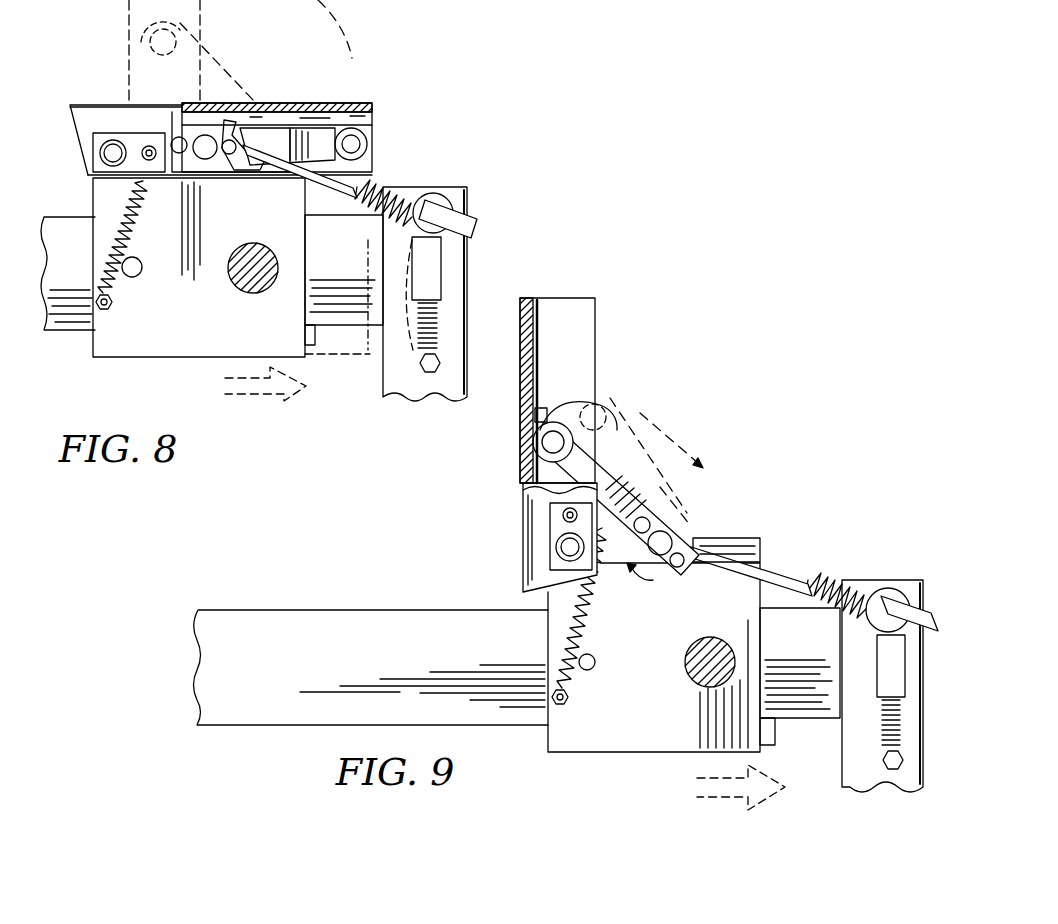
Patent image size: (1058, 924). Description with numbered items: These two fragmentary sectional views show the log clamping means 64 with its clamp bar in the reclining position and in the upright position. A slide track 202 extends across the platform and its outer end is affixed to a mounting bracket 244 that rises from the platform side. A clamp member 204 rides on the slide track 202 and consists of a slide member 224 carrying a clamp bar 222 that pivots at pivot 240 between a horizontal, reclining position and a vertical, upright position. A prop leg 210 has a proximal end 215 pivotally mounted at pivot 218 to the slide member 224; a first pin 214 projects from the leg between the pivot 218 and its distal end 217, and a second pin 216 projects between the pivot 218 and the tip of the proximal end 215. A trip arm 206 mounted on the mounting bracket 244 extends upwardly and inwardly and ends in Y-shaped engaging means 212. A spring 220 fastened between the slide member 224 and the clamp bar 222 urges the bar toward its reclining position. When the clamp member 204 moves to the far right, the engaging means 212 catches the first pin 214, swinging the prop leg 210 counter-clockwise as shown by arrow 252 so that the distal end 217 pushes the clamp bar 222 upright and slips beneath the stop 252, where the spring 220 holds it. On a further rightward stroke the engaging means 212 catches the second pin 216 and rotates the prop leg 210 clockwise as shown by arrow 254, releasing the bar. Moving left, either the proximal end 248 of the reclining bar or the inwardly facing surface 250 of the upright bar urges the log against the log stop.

In FIG. 8, the clamping means 64 is at (378, 85).
In FIG. 9, the clamping means 64 is at (722, 452).
In FIG. 8, the slide track 202 is at (70, 322).
In FIG. 9, the slide track 202 is at (362, 648).
In FIG. 8, the clamp member 204 is at (386, 124).
In FIG. 9, the clamp member 204 is at (652, 374).
In FIG. 8, the trip arm 206 is at (303, 200).
In FIG. 9, the trip arm 206 is at (797, 585).
In FIG. 8, the prop leg 210 is at (323, 130).
In FIG. 9, the prop leg 210 is at (568, 455).
In FIG. 8, the Y-shaped engaging means 212 is at (240, 105).
In FIG. 9, the Y-shaped engaging means 212 is at (680, 590).
In FIG. 8, the first pin 214 is at (222, 82).
In FIG. 9, the first pin 214 is at (648, 518).
In FIG. 8, the proximal end 215 is at (182, 178).
In FIG. 9, the proximal end 215 is at (665, 572).
In FIG. 8, the second pin 216 is at (175, 140).
In FIG. 9, the second pin 216 is at (770, 548).
In FIG. 8, the distal end 217 is at (198, 30).
In FIG. 9, the distal end 217 is at (608, 412).
In FIG. 8, the pivot 218 is at (206, 133).
In FIG. 9, the pivot 218 is at (672, 540).
In FIG. 8, the spring 220 is at (123, 207).
In FIG. 9, the spring 220 is at (583, 628).
In FIG. 8, the clamp bar 222 is at (313, 100).
In FIG. 9, the clamp bar 222 is at (521, 298).
In FIG. 8, the slide member 224 is at (149, 347).
In FIG. 9, the slide member 224 is at (645, 748).
In FIG. 8, the pivot 240 is at (110, 154).
In FIG. 9, the pivot 240 is at (566, 548).
In FIG. 8, the mounting bracket 244 is at (381, 375).
In FIG. 8, the proximal end 248 is at (70, 105).
In FIG. 9, the inwardly facing surface 250 is at (535, 416).
In FIG. 9, the stop 252 is at (560, 418).
In FIG. 9, the arrow 254 is at (678, 432).